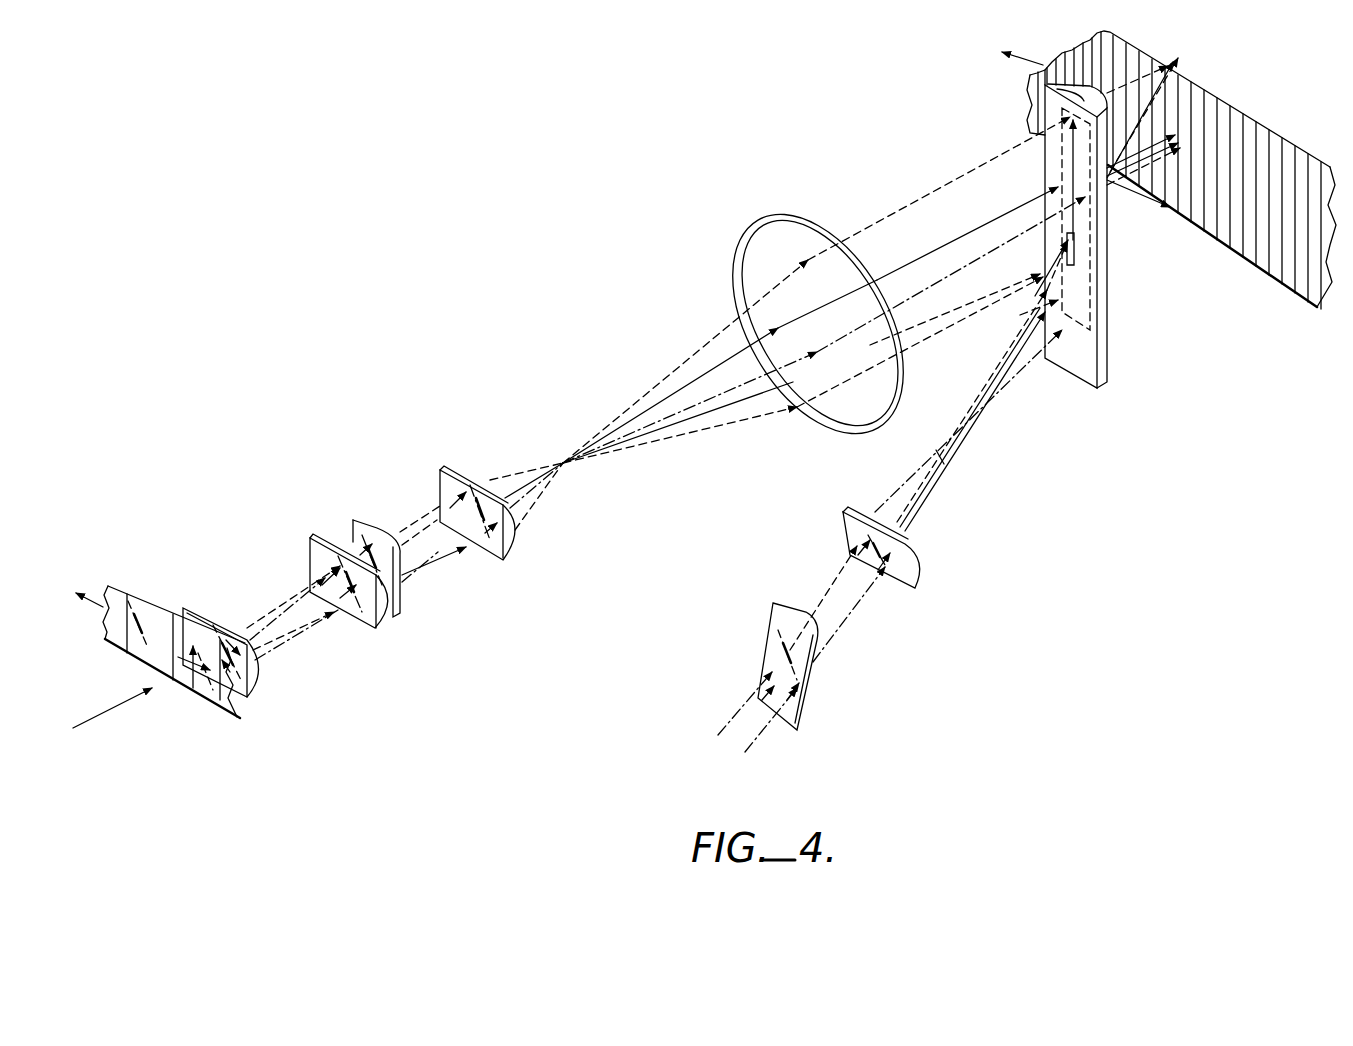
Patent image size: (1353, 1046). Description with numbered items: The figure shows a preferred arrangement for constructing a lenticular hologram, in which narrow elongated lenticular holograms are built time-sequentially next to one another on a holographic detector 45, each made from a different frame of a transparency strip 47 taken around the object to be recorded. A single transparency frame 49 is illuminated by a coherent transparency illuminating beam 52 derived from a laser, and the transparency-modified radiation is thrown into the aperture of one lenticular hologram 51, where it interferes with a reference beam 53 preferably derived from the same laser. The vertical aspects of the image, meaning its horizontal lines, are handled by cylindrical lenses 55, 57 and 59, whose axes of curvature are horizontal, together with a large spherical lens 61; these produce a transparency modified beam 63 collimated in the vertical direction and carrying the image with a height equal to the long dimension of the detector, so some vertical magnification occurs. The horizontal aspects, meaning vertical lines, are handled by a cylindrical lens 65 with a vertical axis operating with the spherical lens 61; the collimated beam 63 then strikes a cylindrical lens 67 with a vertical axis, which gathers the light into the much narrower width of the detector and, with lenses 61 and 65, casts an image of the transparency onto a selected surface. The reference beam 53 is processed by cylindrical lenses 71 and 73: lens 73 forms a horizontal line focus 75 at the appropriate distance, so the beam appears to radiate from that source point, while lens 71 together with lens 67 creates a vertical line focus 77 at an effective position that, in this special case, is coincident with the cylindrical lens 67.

The holographic detector 45 is at (1270, 118).
The transparency strip 47 is at (229, 712).
The transparency frame 49 is at (189, 692).
The lenticular hologram 51 is at (1178, 64).
The transparency illuminating beam 52 is at (108, 712).
The reference beam 53 is at (738, 727).
The cylindrical lens 55 is at (198, 607).
The cylindrical lens 57 is at (322, 540).
The cylindrical lens 59 is at (462, 467).
The spherical lens 61 is at (752, 248).
The transparency modified beam 63 is at (920, 220).
The cylindrical lens 65 is at (377, 522).
The cylindrical lens 67 is at (1082, 98).
The cylindrical lens 71 is at (783, 607).
The cylindrical lens 73 is at (848, 511).
The horizontal line focus 75 is at (938, 458).
The vertical line focus 77 is at (1020, 315).